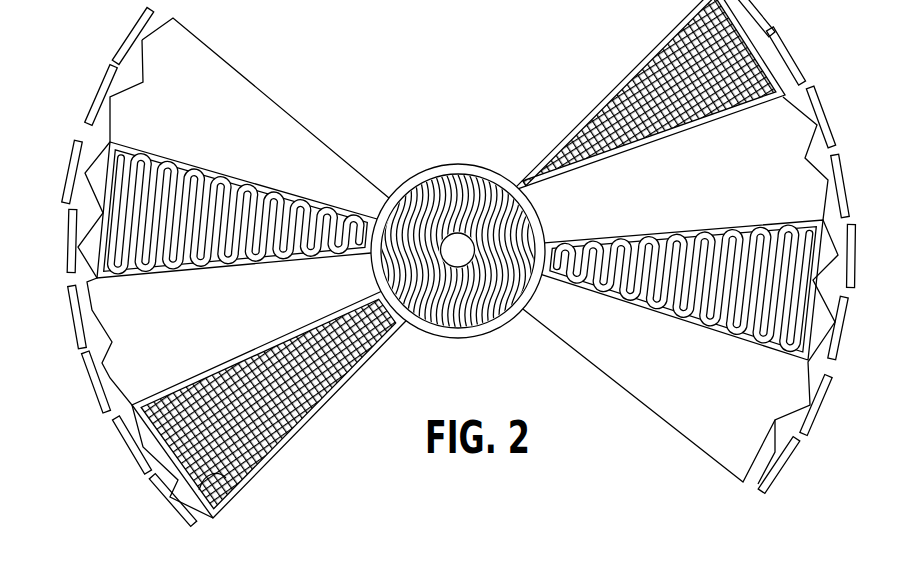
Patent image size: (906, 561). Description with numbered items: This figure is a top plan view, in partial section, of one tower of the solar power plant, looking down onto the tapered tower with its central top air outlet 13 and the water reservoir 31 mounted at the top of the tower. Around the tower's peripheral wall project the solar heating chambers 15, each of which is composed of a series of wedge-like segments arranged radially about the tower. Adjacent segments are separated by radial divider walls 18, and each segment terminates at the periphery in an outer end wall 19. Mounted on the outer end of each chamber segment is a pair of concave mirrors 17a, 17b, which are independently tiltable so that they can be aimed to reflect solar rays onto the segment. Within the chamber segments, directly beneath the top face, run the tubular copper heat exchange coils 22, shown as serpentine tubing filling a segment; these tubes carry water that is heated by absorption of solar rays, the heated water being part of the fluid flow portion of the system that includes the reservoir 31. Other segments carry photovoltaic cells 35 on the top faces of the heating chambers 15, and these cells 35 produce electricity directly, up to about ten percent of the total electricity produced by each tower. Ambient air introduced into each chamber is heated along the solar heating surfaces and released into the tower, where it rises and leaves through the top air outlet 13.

The top air outlet 13 is at (473, 257).
The solar heating chamber 15 is at (606, 68).
The concave mirror 17a is at (160, 490).
The concave mirror 17b is at (126, 437).
The radial divider wall 18 is at (226, 362).
The outer end wall 19 is at (226, 478).
The tubular copper heat exchange coil 22 is at (186, 254).
The water reservoir 31 is at (442, 315).
The photovoltaic cell 35 is at (330, 372).